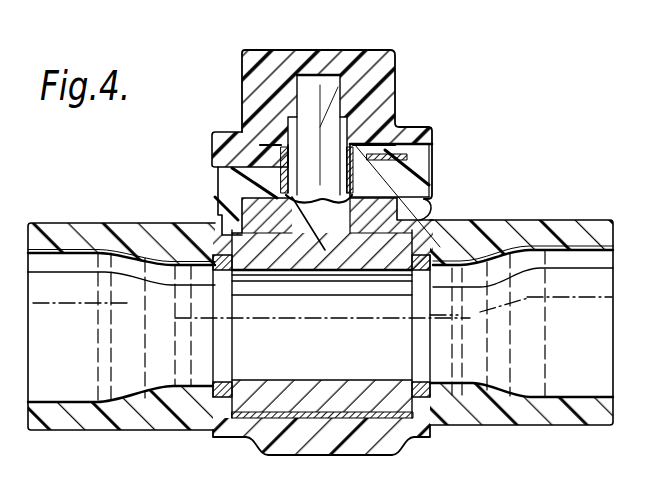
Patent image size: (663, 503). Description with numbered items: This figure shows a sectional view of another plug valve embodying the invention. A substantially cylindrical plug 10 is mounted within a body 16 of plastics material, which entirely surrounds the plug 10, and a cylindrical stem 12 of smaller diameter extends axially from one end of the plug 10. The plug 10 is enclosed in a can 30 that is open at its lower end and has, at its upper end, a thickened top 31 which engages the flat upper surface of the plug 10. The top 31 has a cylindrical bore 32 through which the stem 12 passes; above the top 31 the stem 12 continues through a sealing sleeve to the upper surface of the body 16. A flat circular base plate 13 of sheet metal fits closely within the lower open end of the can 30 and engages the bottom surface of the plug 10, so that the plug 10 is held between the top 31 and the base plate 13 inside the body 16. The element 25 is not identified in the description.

The plug 10 is at (421, 220).
The stem 12 is at (378, 50).
The base plate 13 is at (290, 420).
The body 16 is at (512, 224).
The flange ring (25') 25 is at (266, 160).
The can 30 is at (216, 224).
The thickened top 31 is at (383, 208).
The cylindrical bore 32 is at (303, 230).